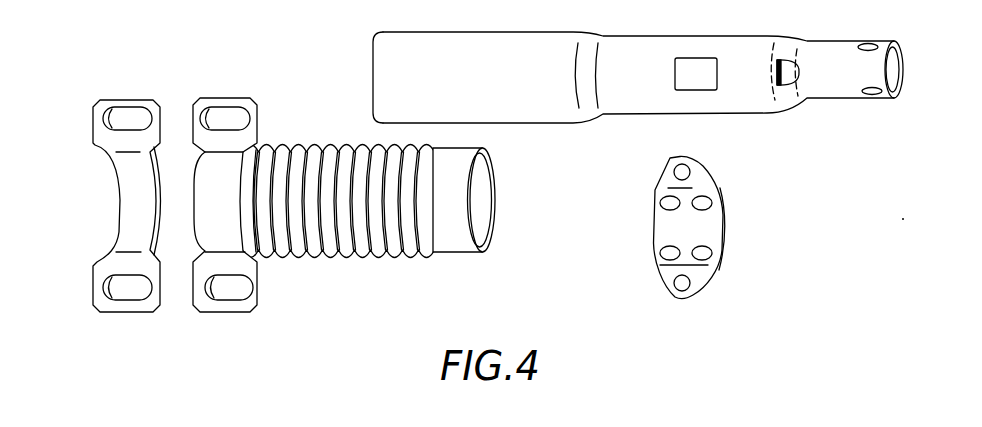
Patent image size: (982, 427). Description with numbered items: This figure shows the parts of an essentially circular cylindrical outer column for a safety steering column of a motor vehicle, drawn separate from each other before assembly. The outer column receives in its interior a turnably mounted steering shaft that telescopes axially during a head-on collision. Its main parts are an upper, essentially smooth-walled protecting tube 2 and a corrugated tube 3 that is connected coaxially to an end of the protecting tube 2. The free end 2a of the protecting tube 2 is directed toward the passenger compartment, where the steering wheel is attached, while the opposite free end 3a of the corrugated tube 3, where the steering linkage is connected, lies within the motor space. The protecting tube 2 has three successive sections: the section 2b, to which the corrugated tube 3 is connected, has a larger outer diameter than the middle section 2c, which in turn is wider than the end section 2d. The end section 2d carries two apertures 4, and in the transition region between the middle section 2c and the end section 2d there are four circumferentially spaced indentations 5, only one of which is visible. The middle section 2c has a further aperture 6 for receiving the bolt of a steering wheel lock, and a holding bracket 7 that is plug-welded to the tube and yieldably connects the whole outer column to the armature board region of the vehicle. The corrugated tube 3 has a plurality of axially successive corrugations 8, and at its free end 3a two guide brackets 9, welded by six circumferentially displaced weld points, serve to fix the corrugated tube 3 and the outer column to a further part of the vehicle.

The protecting tube 2 is at (613, 128).
The free end of the protecting tube 2a is at (893, 61).
The section of the protecting tube 2b is at (533, 112).
The middle section of the protecting tube 2c is at (747, 103).
The end section of the protecting tube 2d is at (880, 94).
The corrugated tube 3 is at (357, 266).
The free end of the corrugated tube 3a is at (193, 210).
The apertures 4 is at (875, 94).
The indentations 5 is at (788, 85).
The aperture 6 is at (705, 115).
The holding bracket 7 is at (702, 278).
The corrugations 8 is at (288, 262).
The guide brackets 9 is at (227, 305).